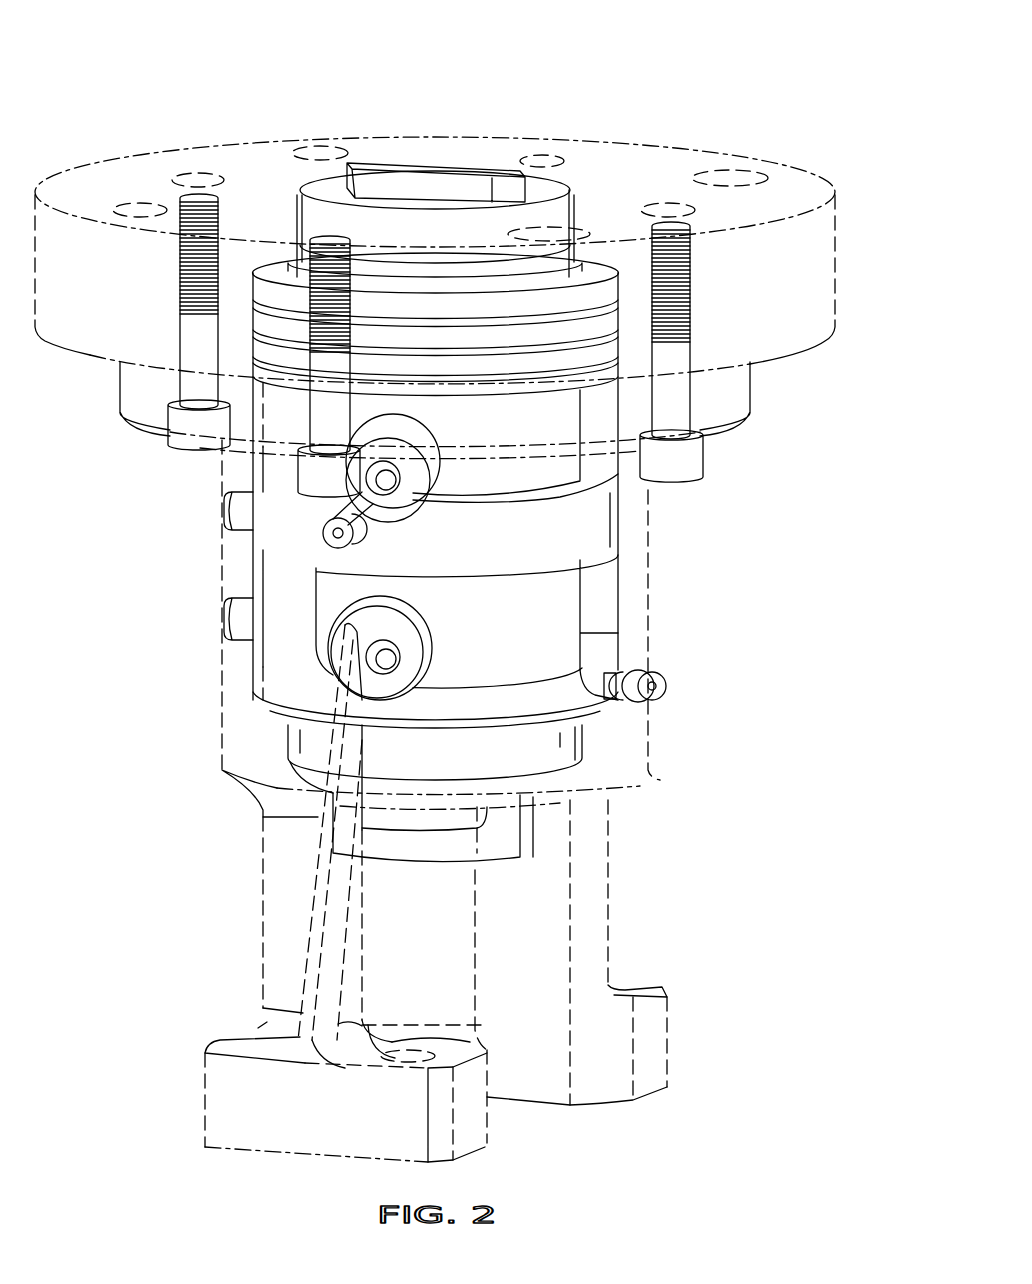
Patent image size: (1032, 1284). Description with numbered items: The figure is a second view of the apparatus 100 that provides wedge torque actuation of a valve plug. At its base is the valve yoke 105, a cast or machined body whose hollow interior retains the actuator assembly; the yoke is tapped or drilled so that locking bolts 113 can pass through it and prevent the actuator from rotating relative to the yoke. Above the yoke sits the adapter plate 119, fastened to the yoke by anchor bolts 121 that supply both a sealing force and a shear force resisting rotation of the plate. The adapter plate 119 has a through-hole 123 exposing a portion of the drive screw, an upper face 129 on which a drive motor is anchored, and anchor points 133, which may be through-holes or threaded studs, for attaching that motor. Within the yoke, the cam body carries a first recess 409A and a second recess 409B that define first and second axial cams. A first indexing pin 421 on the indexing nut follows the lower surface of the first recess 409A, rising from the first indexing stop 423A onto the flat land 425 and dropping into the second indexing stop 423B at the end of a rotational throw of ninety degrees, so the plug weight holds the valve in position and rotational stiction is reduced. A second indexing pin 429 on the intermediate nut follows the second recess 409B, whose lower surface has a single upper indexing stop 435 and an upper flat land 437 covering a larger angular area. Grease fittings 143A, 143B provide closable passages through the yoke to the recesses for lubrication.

The apparatus 100 is at (255, 72).
The valve yoke 105 is at (649, 740).
The locking bolts 113 is at (232, 600).
The adapter plate 119 is at (838, 216).
The anchor bolts 121 is at (703, 458).
The through-hole 123 is at (572, 208).
The upper face 129 is at (188, 160).
The anchor points 133 is at (738, 178).
The grease fitting 143A is at (667, 686).
The grease fitting 143B is at (354, 540).
The first recess 409A is at (553, 572).
The second recess 409B is at (447, 402).
The first indexing pin 421 is at (430, 640).
The first indexing stop 423A is at (396, 700).
The second indexing stop 423B is at (586, 688).
The flat land 425 is at (530, 672).
The second indexing pin 429 is at (330, 508).
The upper indexing stop 435 is at (398, 528).
The upper flat land 437 is at (583, 480).